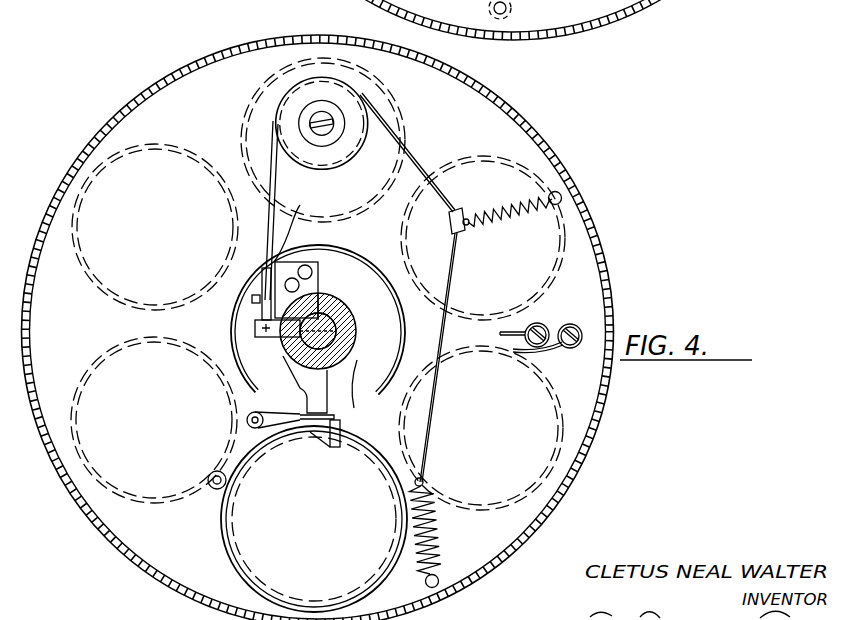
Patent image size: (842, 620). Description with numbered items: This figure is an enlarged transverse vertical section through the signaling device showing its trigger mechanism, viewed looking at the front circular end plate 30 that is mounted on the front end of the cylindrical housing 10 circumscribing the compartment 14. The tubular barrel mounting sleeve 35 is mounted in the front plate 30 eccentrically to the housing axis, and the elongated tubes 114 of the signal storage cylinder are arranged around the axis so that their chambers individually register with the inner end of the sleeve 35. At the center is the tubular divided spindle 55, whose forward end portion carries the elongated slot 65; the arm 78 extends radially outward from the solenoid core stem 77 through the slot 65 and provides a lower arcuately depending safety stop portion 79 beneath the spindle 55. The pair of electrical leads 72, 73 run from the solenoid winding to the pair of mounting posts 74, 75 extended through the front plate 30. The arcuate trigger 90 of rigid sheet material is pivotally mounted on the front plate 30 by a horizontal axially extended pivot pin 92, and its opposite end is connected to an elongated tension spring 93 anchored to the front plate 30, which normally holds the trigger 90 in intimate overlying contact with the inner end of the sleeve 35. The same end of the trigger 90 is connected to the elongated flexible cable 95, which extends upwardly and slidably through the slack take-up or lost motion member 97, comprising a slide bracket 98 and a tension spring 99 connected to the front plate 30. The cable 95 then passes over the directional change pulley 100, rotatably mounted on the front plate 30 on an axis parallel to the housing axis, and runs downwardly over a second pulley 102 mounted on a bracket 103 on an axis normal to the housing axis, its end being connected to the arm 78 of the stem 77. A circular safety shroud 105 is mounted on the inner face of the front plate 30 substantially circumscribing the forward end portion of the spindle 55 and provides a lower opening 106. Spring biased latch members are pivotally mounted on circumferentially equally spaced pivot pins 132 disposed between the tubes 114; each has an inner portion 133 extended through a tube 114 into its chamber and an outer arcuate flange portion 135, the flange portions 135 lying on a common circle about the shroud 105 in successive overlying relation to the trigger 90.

The cylindrical housing 10 is at (522, 108).
The compartment 14 is at (156, 122).
The front circular end plate 30 is at (216, 136).
The tubular barrel mounting sleeve 35 is at (378, 563).
The tubular divided spindle 55 is at (345, 318).
The elongated slot 65 is at (337, 328).
The electrical lead 72 is at (562, 346).
The electrical lead 73 is at (502, 337).
The mounting post 74 is at (575, 324).
The mounting post 75 is at (533, 323).
The stem 77 is at (328, 318).
The arm 78 is at (256, 330).
The safety stop portion 79 is at (278, 360).
The arcuate trigger 90 is at (362, 436).
The pivot pin 92 is at (216, 490).
The tension spring 93 is at (442, 534).
The flexible cable 95 is at (415, 137).
The slack take-up or lost motion member 97 is at (496, 195).
The slide bracket 98 is at (450, 231).
The tension spring 99 is at (502, 222).
The directional change pulley 100 is at (287, 93).
The second pulley 102 is at (262, 283).
The bracket 103 is at (305, 271).
The circular safety shroud 105 is at (309, 223).
The lower opening 106 is at (367, 376).
The elongated tubes 114 is at (310, 56).
The pivot pin 132 is at (246, 420).
The inner portion 133 is at (330, 450).
The outer arcuate flange portion 135 is at (340, 460).